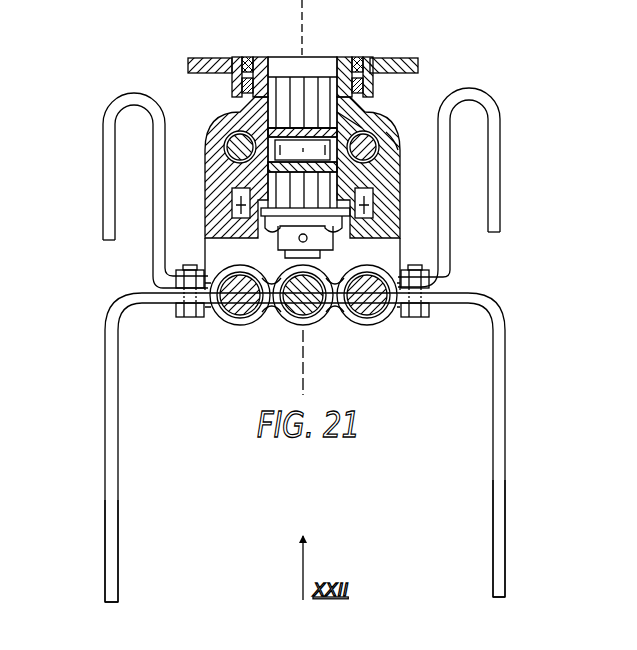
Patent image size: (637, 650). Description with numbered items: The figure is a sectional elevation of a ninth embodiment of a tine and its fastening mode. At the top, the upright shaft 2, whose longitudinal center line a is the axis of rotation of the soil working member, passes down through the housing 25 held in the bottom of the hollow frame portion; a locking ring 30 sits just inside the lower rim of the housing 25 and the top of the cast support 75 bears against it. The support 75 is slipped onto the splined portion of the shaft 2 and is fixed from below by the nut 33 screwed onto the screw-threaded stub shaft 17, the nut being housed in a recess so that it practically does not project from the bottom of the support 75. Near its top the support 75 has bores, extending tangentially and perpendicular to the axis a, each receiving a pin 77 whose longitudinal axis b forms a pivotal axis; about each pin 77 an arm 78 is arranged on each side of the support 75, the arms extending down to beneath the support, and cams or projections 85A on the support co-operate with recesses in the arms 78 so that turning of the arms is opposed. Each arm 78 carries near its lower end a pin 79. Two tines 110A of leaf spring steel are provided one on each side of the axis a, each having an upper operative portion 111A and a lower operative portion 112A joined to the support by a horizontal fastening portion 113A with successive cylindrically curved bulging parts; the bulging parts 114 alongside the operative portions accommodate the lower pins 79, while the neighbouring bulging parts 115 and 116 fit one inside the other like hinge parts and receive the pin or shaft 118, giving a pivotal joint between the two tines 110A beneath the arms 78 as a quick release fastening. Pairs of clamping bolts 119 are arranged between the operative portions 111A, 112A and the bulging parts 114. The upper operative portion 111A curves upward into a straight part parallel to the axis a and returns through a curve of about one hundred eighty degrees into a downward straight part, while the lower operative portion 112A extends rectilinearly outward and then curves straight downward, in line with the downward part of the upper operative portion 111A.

The longitudinal center line a is at (300, 12).
The upright shaft 2 is at (309, 56).
The housing 25 is at (208, 58).
The locking ring 30 is at (245, 95).
The support 75 is at (362, 128).
The pin 77 is at (225, 150).
The longitudinal axis of the pin b is at (392, 136).
The cams or projections 85A is at (235, 205).
The arm 78 is at (212, 250).
The nut 33 is at (280, 243).
The screw-threaded stub shaft 17 is at (318, 255).
The bulging part 114 is at (380, 268).
The clamping bolts 119 is at (183, 318).
The horizontal fastening portion 113A is at (238, 322).
The bulging part 116 is at (260, 318).
The pin or shaft 118 is at (308, 324).
The bulging part 115 is at (320, 312).
The pin 79 is at (248, 330).
The upper operative portion 111A is at (103, 195).
The tine 110A is at (105, 372).
The lower operative portion 112A is at (105, 557).